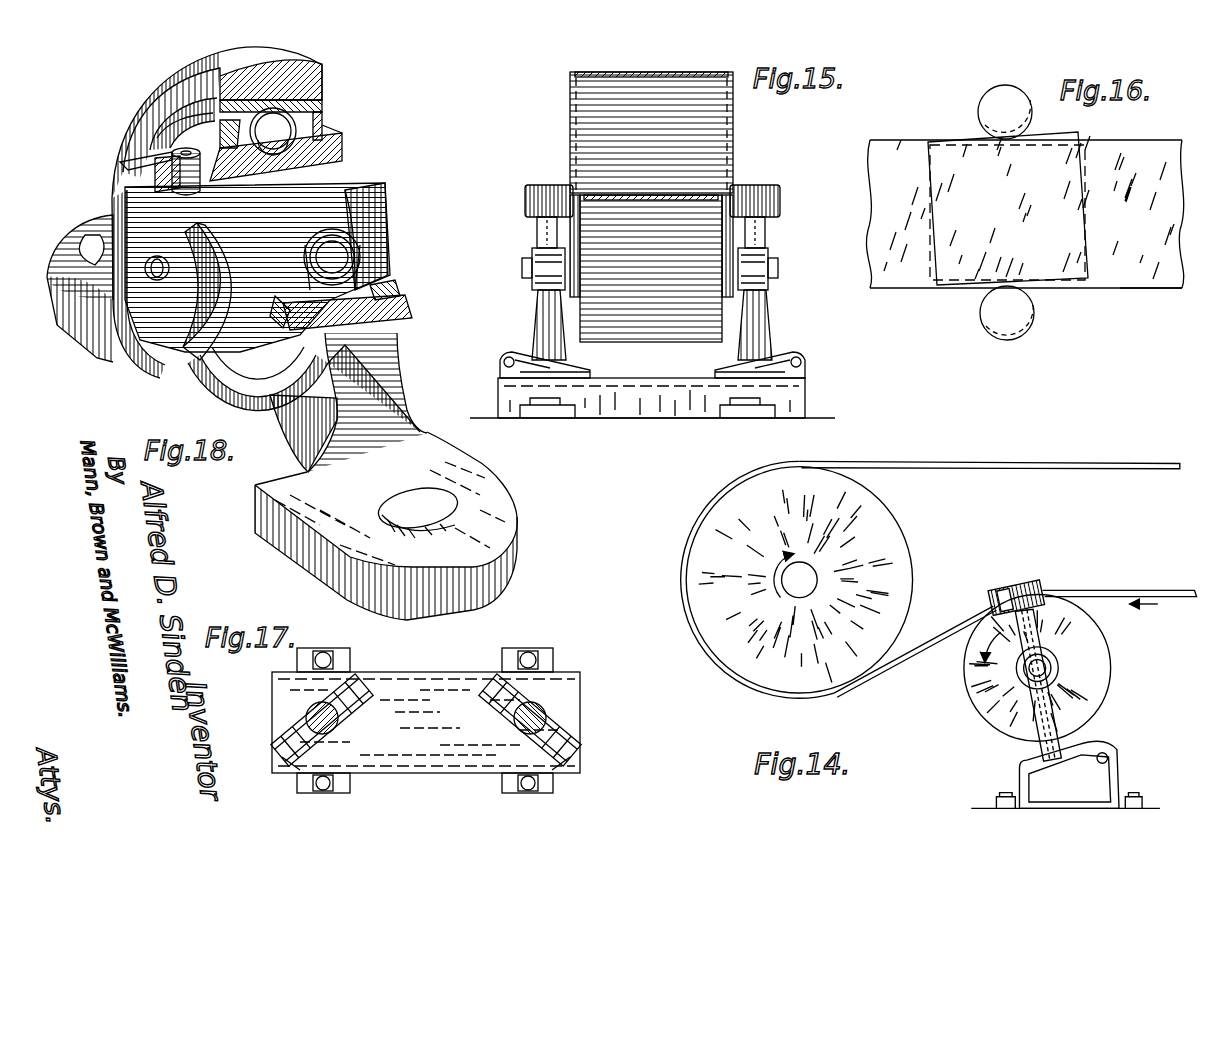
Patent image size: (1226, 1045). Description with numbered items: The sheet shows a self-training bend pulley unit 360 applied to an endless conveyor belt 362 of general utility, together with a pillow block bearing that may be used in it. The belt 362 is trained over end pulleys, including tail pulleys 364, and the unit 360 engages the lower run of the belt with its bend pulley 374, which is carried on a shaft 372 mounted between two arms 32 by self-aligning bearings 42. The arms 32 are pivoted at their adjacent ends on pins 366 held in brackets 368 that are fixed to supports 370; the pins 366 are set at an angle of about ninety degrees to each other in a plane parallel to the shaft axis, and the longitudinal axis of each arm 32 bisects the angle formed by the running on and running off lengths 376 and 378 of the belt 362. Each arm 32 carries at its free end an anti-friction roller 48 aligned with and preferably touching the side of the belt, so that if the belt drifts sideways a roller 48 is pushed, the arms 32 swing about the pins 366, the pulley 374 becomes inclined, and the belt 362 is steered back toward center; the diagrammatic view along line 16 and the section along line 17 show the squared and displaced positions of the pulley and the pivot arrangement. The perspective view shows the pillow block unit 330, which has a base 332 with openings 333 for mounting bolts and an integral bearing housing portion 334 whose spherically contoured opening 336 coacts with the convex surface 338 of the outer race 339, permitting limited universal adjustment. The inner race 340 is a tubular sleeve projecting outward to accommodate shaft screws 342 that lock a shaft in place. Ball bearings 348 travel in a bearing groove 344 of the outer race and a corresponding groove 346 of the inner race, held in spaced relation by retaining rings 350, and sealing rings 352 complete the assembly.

In FIG. 18, the pillow block unit 330 is at (178, 387).
In FIG. 18, the base 332 is at (440, 463).
In FIG. 18, the openings 333 is at (455, 510).
In FIG. 18, the bearing housing portion 334 is at (240, 46).
In FIG. 18, the spherically contoured opening 336 is at (390, 284).
In FIG. 18, the convex surface 338 is at (222, 84).
In FIG. 18, the outer race 339 is at (275, 95).
In FIG. 18, the inner race 340 is at (392, 201).
In FIG. 18, the shaft screws 342 is at (157, 280).
In FIG. 18, the bearing groove 344 is at (362, 330).
In FIG. 18, the groove 346 is at (309, 212).
In FIG. 18, the ball bearings 348 is at (276, 125).
In FIG. 18, the retaining rings 350 is at (313, 234).
In FIG. 18, the sealing rings 352 is at (210, 135).
In FIG. 15, the self-training bend pulley unit 360 is at (780, 305).
In FIG. 14, the self-training bend pulley unit 360 is at (967, 713).
In FIG. 15, the endless conveyor belt 362 is at (597, 70).
In FIG. 16, the endless conveyor belt 362 is at (1160, 167).
In FIG. 14, the endless conveyor belt 362 is at (1043, 462).
In FIG. 14, the tail pulleys 364 is at (732, 640).
In FIG. 15, the pins 366 is at (503, 363).
In FIG. 14, the pins 366 is at (1087, 739).
In FIG. 17, the pins 366 is at (278, 753).
In FIG. 15, the brackets 368 is at (503, 372).
In FIG. 14, the brackets 368 is at (1075, 728).
In FIG. 17, the brackets 368 is at (367, 703).
In FIG. 15, the supports 370 is at (813, 405).
In FIG. 14, the supports 370 is at (1100, 763).
In FIG. 17, the supports 370 is at (410, 773).
In FIG. 15, the shaft 372 is at (779, 270).
In FIG. 14, the shaft 372 is at (1030, 657).
In FIG. 15, the bend pulley 374 is at (670, 217).
In FIG. 16, the bend pulley 374 is at (1087, 177).
In FIG. 14, the bend pulley 374 is at (957, 660).
In FIG. 16, the running on length 376 is at (1137, 282).
In FIG. 14, the running on length 376 is at (1150, 580).
In FIG. 14, the running off length 378 is at (913, 633).
In FIG. 15, the arms 32 is at (532, 327).
In FIG. 14, the arms 32 is at (1025, 717).
In FIG. 17, the arms 32 is at (338, 725).
In FIG. 15, the self-aligning bearings 42 is at (520, 273).
In FIG. 14, the self-aligning bearings 42 is at (1034, 642).
In FIG. 15, the anti-friction roller 48 is at (540, 190).
In FIG. 16, the anti-friction roller 48 is at (980, 92).
In FIG. 14, the anti-friction roller 48 is at (1013, 575).
In FIG. 14, the line 16— 16 is at (1053, 512).
In FIG. 14, the line 17— 17 is at (1118, 704).